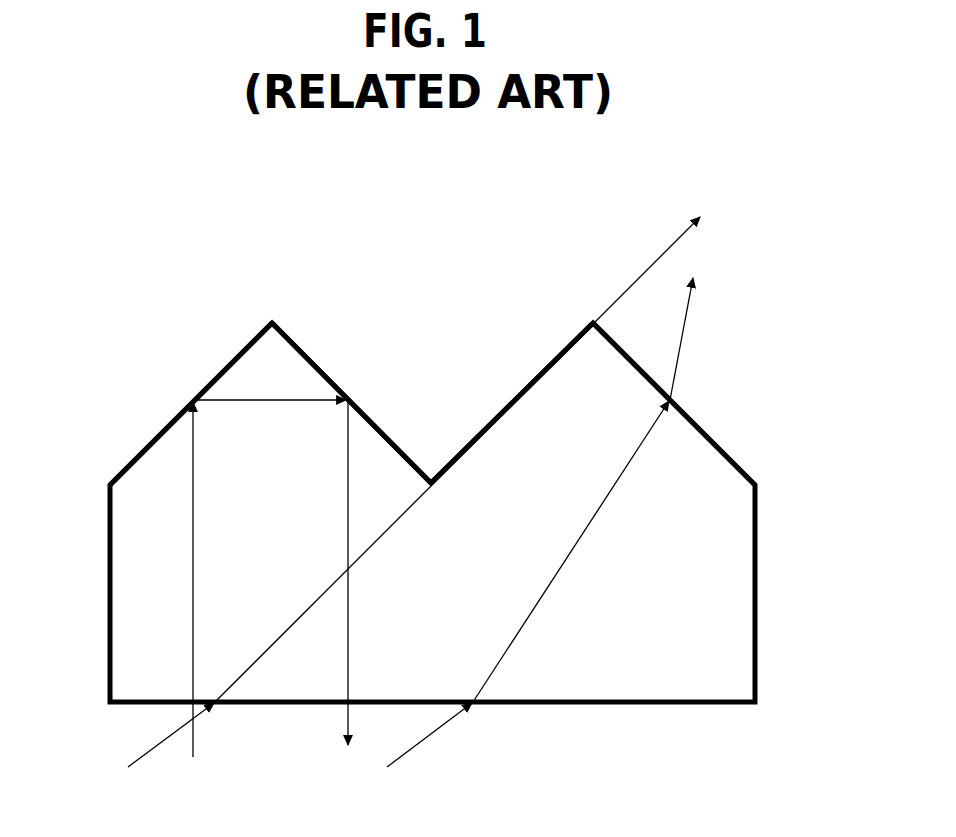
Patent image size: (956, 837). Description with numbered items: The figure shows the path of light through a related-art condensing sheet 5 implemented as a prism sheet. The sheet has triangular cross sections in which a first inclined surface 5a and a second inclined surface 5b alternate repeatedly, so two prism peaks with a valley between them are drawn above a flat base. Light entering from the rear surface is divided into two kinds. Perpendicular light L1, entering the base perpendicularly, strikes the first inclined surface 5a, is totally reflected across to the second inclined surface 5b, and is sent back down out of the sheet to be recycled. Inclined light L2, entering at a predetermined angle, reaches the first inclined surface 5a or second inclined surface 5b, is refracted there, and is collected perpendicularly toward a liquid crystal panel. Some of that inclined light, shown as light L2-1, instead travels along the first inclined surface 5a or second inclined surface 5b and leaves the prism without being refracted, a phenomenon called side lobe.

The condensing sheet 5 is at (452, 214).
The first inclined surface 5a is at (162, 431).
The second inclined surface 5b is at (307, 354).
The perpendicular light L1 is at (265, 595).
The inclined light L2 is at (531, 534).
The side lobe light L2-1 is at (396, 503).